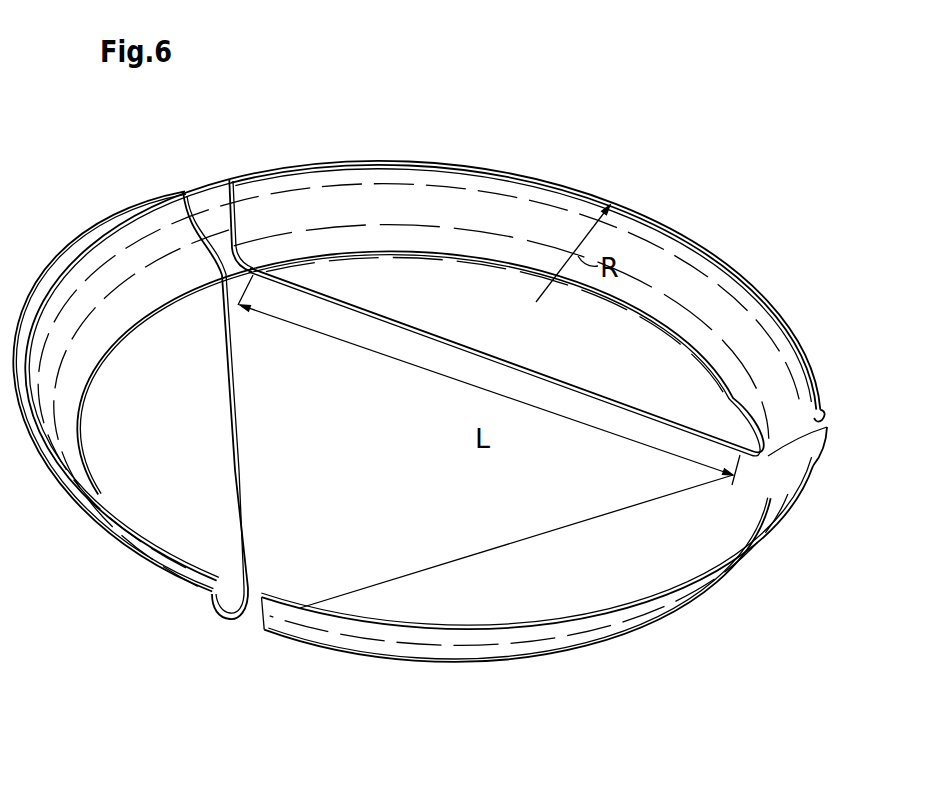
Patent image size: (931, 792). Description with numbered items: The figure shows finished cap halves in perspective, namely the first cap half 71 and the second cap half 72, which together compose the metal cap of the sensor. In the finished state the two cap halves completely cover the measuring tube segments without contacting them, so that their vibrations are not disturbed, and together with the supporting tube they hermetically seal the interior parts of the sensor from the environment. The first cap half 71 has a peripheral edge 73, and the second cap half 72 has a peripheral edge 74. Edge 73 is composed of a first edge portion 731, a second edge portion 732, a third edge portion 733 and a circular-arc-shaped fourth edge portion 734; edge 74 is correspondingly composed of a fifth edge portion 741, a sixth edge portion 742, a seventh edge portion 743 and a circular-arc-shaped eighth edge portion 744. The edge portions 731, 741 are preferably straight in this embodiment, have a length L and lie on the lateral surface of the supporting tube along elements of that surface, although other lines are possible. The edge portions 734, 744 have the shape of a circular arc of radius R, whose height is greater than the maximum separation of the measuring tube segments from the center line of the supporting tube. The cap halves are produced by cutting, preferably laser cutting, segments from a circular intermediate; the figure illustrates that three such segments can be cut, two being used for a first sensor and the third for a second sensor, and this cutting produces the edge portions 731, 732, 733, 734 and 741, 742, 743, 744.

The first cap half 71 is at (657, 180).
The second cap half 72 is at (47, 267).
The peripheral edge 73 is at (732, 250).
The first edge portion 731 is at (637, 404).
The second edge portion 732 is at (828, 398).
The third edge portion 733 is at (225, 194).
The fourth edge portion 734 is at (470, 163).
The peripheral edge 74 is at (100, 233).
The fifth edge portion 741 is at (240, 440).
The sixth edge portion 742 is at (245, 618).
The seventh edge portion 743 is at (180, 226).
The eighth edge portion 744 is at (98, 522).